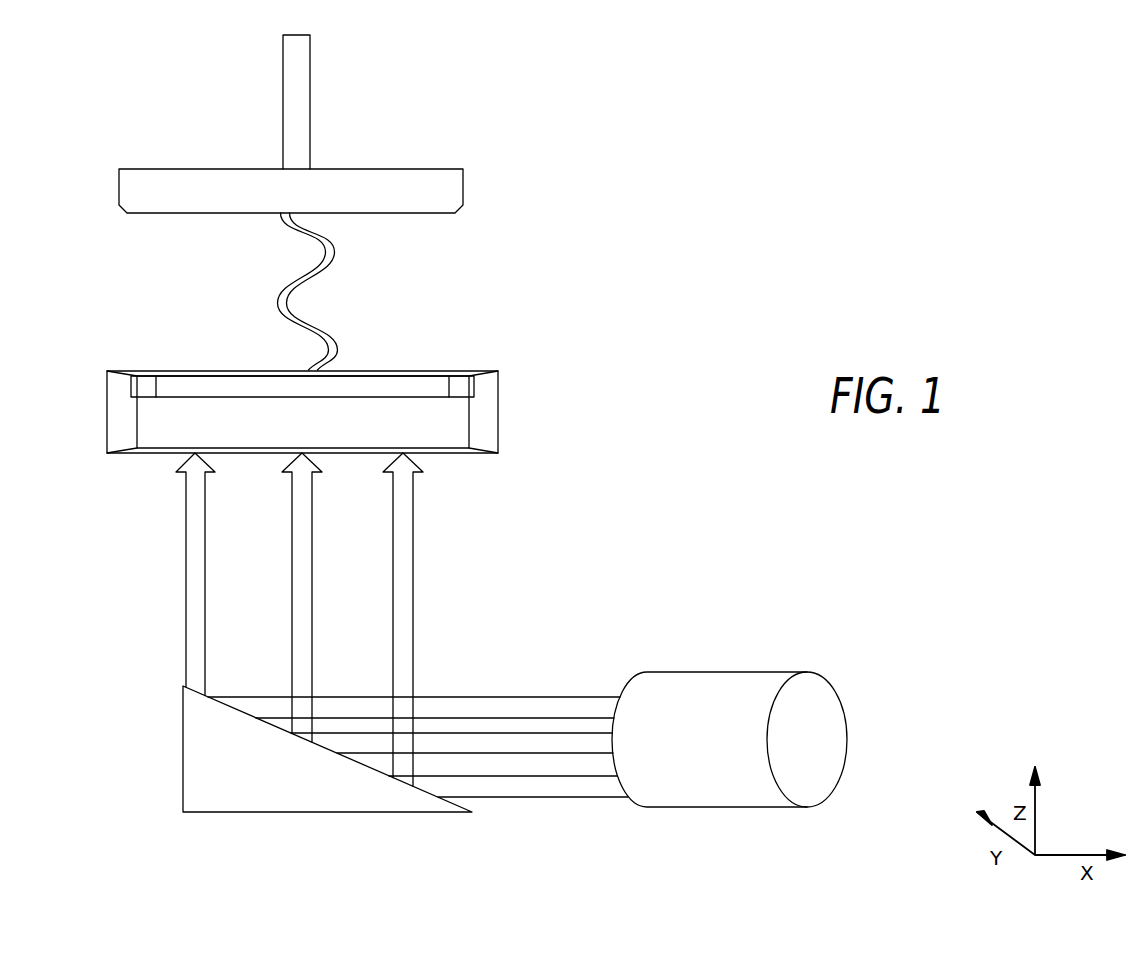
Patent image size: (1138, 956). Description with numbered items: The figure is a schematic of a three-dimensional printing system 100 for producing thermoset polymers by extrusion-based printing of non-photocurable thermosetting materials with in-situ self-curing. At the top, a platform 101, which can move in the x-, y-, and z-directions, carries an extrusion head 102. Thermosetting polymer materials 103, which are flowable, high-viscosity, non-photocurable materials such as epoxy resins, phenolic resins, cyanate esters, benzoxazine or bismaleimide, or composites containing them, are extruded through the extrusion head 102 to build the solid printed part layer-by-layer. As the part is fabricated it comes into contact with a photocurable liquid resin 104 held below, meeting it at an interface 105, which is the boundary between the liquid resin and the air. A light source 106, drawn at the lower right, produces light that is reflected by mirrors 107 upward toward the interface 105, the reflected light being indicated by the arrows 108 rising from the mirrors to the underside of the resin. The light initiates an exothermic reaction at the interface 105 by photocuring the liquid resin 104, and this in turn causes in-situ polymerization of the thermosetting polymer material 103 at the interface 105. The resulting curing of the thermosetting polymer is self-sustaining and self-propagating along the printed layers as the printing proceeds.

The 3D printing system 100 is at (484, 127).
The platform 101 is at (310, 102).
The extrusion head 102 is at (463, 188).
The thermosetting polymer materials 103 is at (334, 252).
The liquid resin 104 is at (159, 424).
The interface 105 is at (170, 374).
The light source 106 is at (727, 672).
The mirrors 107 is at (183, 753).
The light beams 108 is at (413, 543).